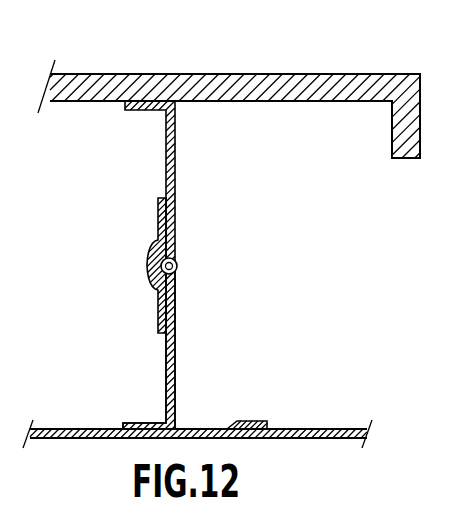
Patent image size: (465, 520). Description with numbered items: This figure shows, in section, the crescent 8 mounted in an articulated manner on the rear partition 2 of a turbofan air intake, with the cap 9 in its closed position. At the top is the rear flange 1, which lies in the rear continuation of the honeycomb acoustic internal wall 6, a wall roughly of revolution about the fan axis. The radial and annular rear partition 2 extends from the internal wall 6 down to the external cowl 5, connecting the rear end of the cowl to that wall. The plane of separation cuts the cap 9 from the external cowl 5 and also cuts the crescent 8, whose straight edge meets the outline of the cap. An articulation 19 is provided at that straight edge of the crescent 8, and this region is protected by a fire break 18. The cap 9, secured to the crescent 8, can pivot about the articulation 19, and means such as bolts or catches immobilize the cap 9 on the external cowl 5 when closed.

The rear flange 1 is at (404, 132).
The rear partition 2 is at (176, 152).
The external cowl 5 is at (310, 429).
The internal wall 6 is at (138, 88).
The crescent 8 is at (176, 378).
The cap 9 is at (80, 429).
The fire break 18 is at (150, 258).
The articulation 19 is at (180, 266).